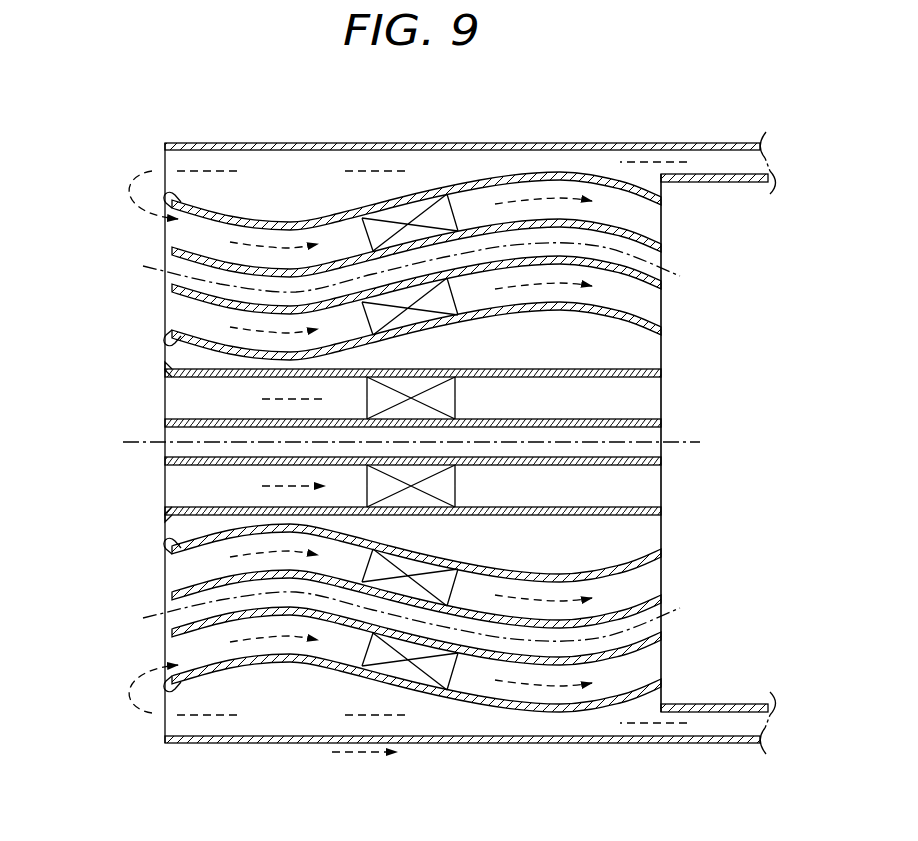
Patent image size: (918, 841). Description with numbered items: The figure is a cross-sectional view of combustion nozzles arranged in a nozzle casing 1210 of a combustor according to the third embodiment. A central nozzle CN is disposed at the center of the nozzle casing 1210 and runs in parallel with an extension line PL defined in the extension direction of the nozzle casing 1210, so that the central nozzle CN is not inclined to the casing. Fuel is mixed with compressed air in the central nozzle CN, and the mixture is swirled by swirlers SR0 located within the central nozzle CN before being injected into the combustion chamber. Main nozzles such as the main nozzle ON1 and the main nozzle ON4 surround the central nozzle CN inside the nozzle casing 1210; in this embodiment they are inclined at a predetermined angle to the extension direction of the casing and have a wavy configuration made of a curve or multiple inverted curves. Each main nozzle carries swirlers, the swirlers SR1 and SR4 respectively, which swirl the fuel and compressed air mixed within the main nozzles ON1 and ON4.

The nozzle casing 1210 is at (527, 145).
The main nozzle ON1 is at (165, 247).
The swirler SR1 is at (424, 201).
The central nozzle CN is at (165, 428).
The extension line PL is at (152, 442).
The swirler SR0 is at (447, 484).
The main nozzle ON4 is at (165, 610).
The swirler SR4 is at (423, 684).